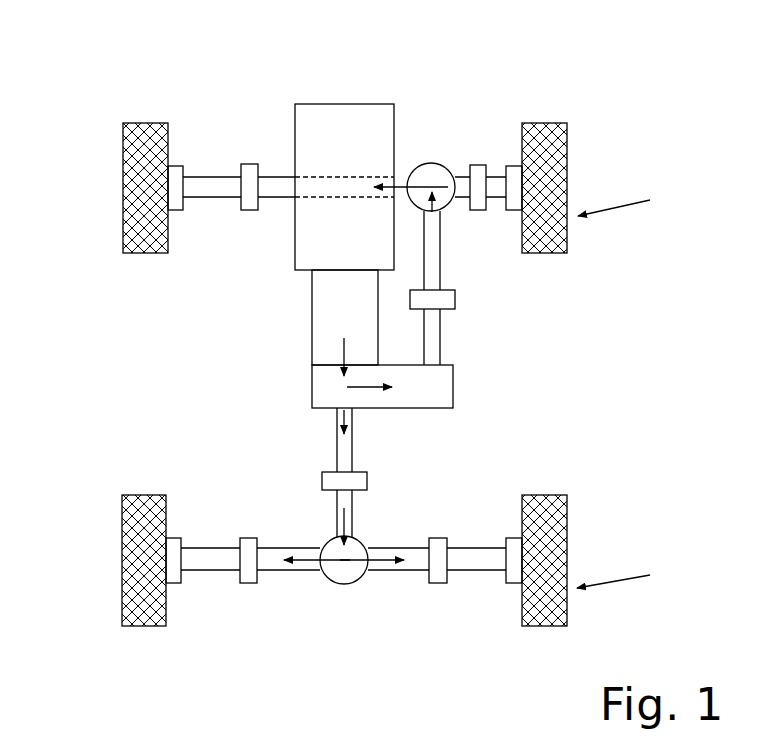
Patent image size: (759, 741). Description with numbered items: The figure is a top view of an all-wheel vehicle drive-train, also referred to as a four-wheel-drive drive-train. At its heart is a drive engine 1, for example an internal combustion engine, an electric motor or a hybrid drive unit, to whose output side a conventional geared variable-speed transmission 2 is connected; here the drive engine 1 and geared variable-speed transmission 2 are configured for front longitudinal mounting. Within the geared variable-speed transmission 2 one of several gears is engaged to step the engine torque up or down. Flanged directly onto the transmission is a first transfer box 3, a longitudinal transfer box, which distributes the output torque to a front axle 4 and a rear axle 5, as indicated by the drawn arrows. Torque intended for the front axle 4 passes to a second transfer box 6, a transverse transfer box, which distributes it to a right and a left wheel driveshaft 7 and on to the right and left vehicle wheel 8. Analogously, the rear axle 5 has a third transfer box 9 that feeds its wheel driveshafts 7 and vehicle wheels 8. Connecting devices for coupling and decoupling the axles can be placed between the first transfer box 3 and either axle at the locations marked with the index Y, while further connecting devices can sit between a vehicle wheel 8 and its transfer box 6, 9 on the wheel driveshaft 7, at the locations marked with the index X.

The drive engine 1 is at (328, 130).
The geared variable-speed transmission 2 is at (335, 290).
The first transfer box 3 is at (325, 388).
The front axle 4 is at (627, 207).
The rear axle 5 is at (627, 577).
The second transfer box 6 is at (430, 164).
The wheel driveshaft 7 is at (218, 188).
The vehicle wheel 8 is at (120, 140).
The third transfer box 9 is at (337, 576).
The mounting location on wheel driveshaft X is at (170, 176).
The mounting location between transfer box and axle Y is at (450, 300).